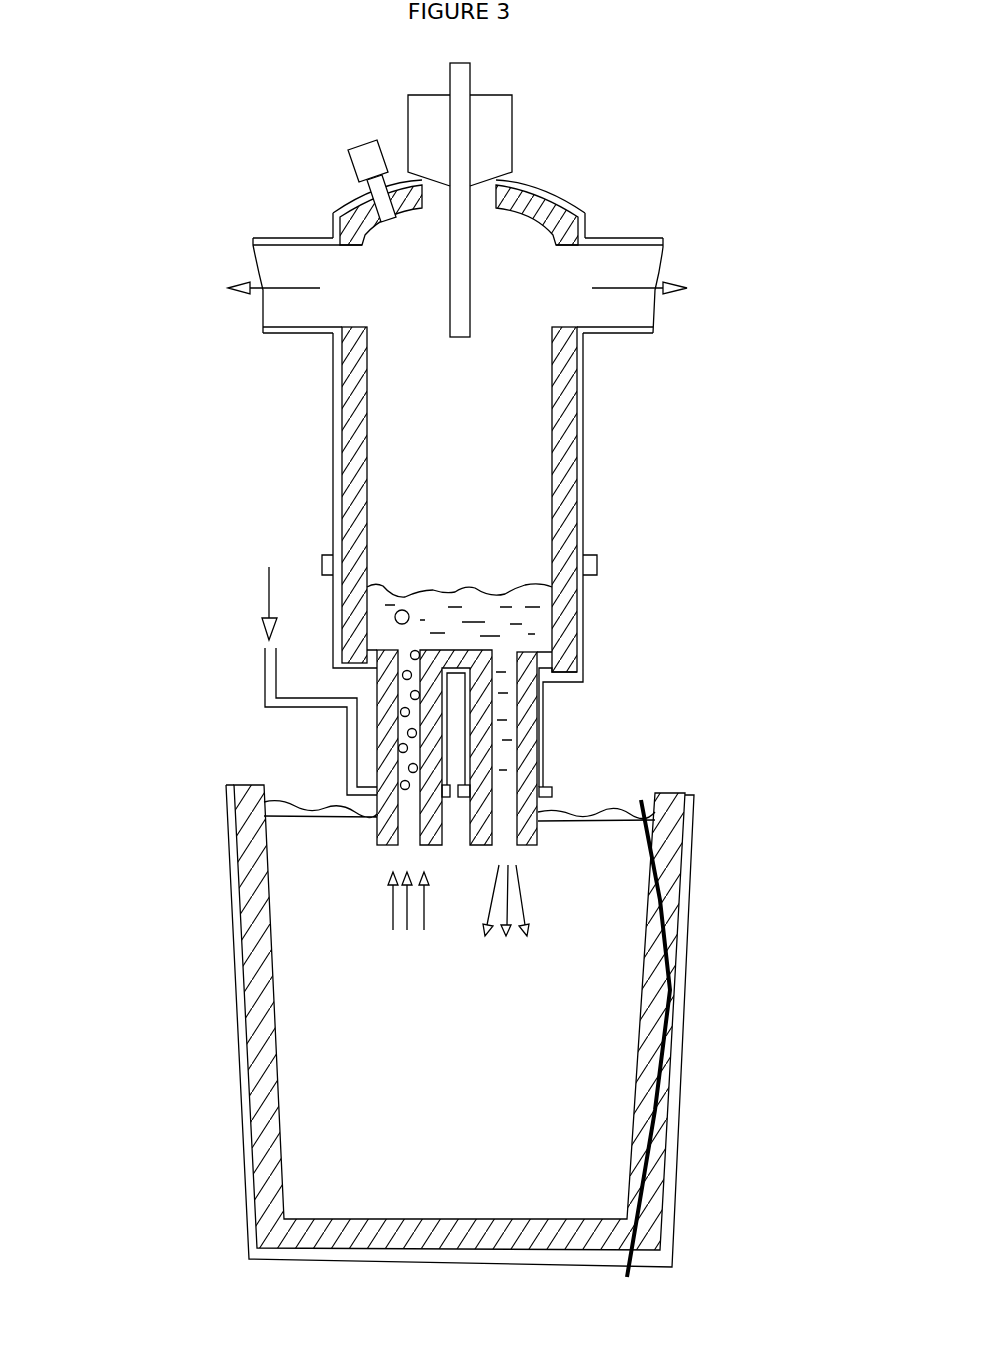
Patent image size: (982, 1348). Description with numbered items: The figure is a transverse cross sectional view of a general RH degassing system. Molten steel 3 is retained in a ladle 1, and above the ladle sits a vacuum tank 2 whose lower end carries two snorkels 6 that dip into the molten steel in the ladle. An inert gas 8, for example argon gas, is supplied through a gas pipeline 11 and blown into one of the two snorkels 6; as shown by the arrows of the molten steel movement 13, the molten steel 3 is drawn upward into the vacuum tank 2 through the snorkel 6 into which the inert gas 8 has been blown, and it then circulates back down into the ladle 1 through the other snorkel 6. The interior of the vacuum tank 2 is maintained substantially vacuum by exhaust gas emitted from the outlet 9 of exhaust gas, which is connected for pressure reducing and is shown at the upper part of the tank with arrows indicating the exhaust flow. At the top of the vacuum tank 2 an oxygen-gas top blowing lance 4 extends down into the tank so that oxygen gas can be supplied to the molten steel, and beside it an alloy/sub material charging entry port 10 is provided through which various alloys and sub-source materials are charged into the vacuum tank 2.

The ladle 1 is at (687, 937).
The vacuum tank 2 is at (613, 418).
The molten steel 3 is at (573, 878).
The oxygen-gas top blowing lance 4 is at (470, 187).
The snorkel 6 is at (540, 713).
The inert gas 8 is at (410, 768).
The outlet of exhaust gas connected for pressure reducing 9 is at (255, 310).
The alloy/sub material charging entry port 10 is at (347, 170).
The gas pipeline 11 is at (263, 676).
The molten steel movement 13 is at (378, 913).